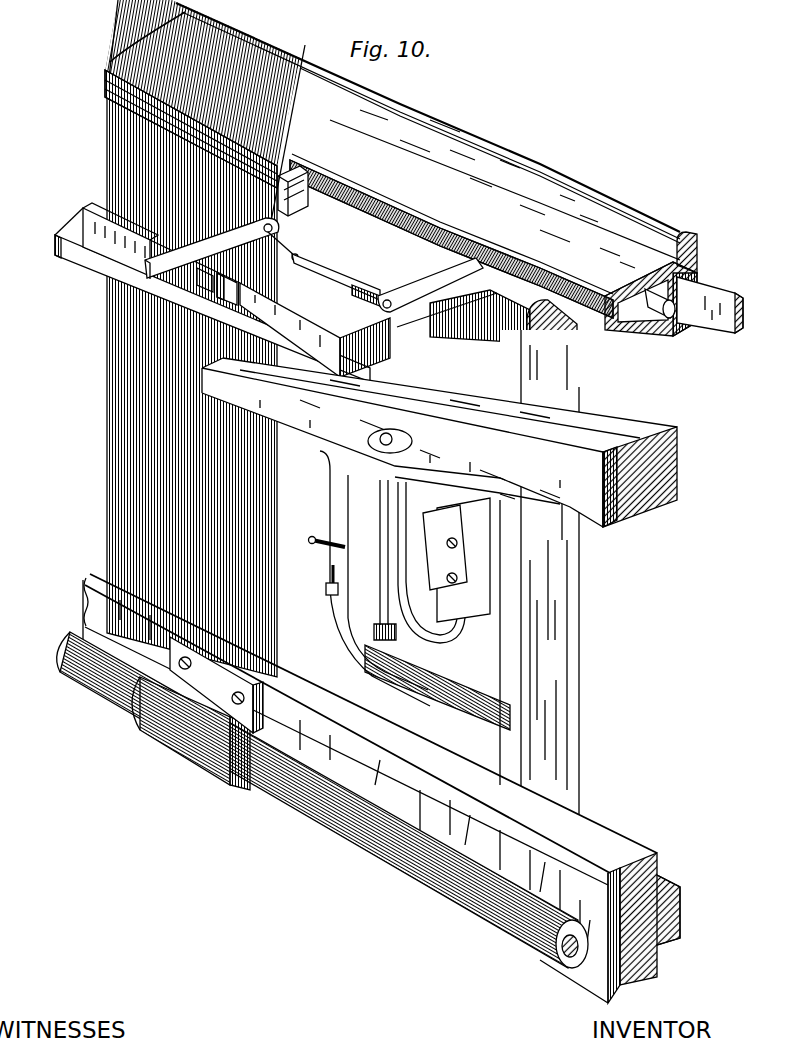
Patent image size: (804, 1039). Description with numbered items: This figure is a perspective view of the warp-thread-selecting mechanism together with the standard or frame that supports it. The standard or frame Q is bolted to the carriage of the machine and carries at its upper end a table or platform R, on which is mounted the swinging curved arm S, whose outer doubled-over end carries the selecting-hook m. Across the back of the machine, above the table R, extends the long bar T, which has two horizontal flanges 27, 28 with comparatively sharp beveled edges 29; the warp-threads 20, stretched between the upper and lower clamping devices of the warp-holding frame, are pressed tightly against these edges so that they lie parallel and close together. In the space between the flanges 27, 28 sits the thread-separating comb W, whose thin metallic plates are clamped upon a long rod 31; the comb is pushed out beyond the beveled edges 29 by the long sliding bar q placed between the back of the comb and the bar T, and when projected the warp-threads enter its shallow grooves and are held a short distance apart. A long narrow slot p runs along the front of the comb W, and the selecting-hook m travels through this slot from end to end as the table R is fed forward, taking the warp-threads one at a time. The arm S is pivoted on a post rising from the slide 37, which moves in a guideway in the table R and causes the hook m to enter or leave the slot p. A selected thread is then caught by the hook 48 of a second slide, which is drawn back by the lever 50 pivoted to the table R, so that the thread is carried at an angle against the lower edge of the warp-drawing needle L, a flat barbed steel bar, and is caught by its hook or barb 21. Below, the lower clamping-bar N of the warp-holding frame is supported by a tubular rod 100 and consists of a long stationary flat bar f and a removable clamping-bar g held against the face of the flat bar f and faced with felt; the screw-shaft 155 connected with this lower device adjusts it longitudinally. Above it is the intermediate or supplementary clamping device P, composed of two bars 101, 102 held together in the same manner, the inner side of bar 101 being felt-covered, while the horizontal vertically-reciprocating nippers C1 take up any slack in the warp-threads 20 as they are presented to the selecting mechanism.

The slot p is at (103, 83).
The selecting-hook m is at (310, 152).
The horizontal flange 27 is at (428, 135).
The long bar T is at (697, 252).
The beveled edges 29 is at (612, 290).
The thread-separating comb W is at (613, 328).
The horizontal flange 28 is at (650, 336).
The long rod 31 is at (676, 325).
The sliding bar q is at (723, 323).
The swinging curved arm S is at (236, 241).
The hook or barb 21 is at (290, 223).
The slide 37 is at (281, 251).
The hook 48 is at (326, 280).
The lever 50 is at (425, 281).
The warp-drawing needle L is at (110, 278).
The table or platform R is at (293, 322).
The intermediate clamping device P is at (677, 449).
The bar 101 is at (677, 482).
The bar 102 is at (587, 507).
The nippers C1 is at (296, 435).
The warp-threads 20 is at (262, 489).
The standard or frame Q is at (567, 617).
The lower clamping-bar N is at (681, 896).
The removable clamping-bar g is at (657, 958).
The tubular rod 100 is at (485, 897).
The screw-shaft 155 is at (552, 960).
The stationary flat bar f is at (606, 978).